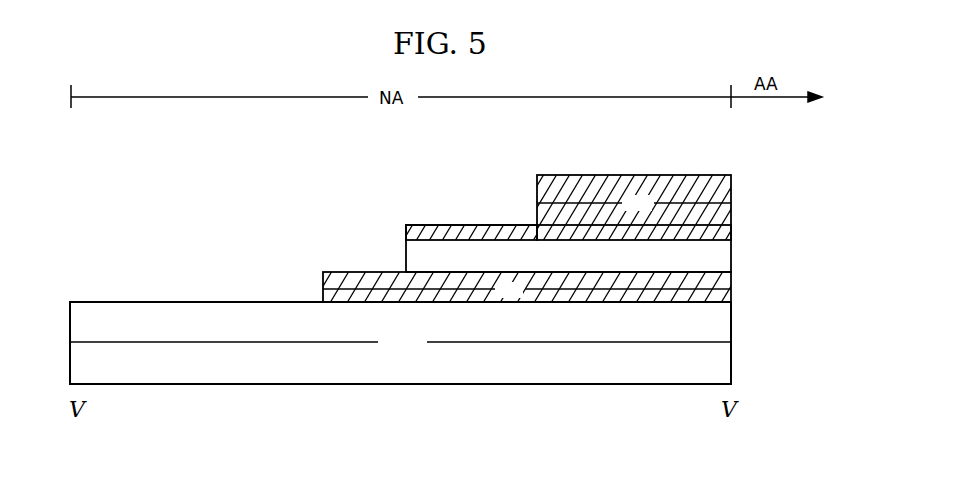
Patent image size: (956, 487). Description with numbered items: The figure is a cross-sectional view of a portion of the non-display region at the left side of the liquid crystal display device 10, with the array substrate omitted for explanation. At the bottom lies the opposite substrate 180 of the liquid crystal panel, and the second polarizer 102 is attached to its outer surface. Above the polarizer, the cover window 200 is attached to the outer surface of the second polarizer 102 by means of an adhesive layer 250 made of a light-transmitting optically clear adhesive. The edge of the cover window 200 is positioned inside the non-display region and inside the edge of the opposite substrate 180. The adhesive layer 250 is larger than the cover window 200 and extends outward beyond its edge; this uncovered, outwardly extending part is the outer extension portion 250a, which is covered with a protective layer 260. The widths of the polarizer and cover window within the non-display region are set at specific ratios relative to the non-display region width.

The liquid crystal display device 10 is at (414, 475).
The second polarizer 102 is at (716, 285).
The opposite substrate 180 is at (715, 325).
The cover window 200 is at (716, 218).
The adhesive layer 250 is at (716, 262).
The outer extension portion 250a is at (438, 248).
The protective layer 260 is at (483, 232).